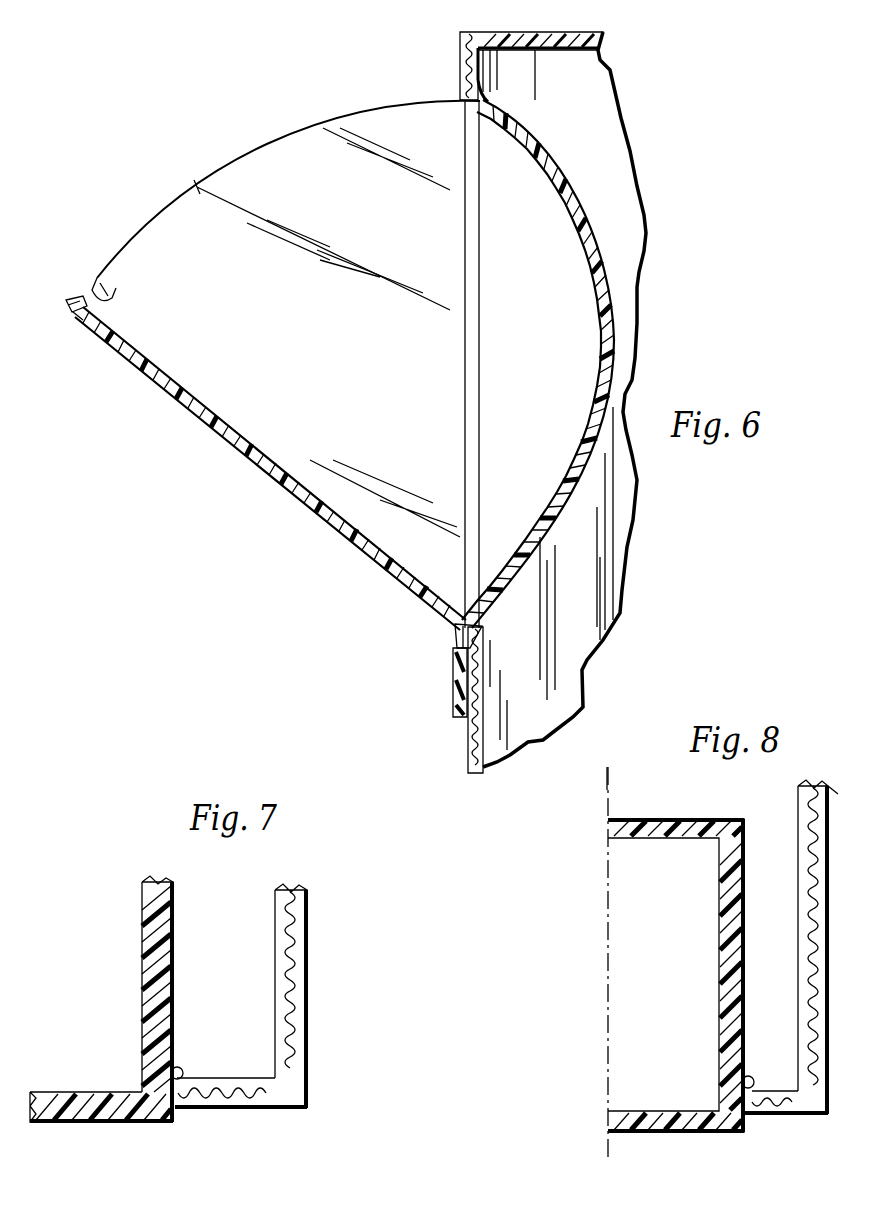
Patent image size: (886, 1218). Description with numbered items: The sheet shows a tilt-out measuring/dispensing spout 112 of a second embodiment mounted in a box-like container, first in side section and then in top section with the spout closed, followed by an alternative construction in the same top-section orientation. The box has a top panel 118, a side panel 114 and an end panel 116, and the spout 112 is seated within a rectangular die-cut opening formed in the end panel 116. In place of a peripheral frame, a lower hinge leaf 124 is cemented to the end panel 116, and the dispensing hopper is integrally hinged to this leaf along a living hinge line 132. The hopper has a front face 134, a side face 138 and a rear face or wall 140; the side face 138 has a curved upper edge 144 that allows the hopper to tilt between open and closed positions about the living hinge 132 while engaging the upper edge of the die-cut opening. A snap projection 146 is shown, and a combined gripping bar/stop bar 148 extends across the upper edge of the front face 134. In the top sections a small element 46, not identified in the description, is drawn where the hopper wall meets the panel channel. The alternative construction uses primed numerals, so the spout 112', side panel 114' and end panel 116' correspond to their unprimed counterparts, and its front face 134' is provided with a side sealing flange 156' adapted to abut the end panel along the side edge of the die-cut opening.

In FIG. 6, the tilt-out measuring/dispensing spout 112 is at (319, 364).
In FIG. 6, the top panel 118 is at (520, 32).
In FIG. 6, the side face 138 is at (305, 152).
In FIG. 7, the side face 138 is at (173, 975).
In FIG. 6, the curved upper edge 144 is at (197, 186).
In FIG. 6, the rear face or wall 140 is at (597, 307).
In FIG. 6, the front face 134 is at (270, 468).
In FIG. 7, the front face 134 is at (101, 1122).
In FIG. 6, the snap projection 146 is at (118, 292).
In FIG. 6, the combined gripping bar/stop bar 148 is at (68, 320).
In FIG. 6, the living hinge line 132 is at (456, 632).
In FIG. 6, the lower hinge leaf 124 is at (455, 690).
In FIG. 7, the side panel 114 is at (321, 996).
In FIG. 7, the end panel 116 is at (246, 1115).
In FIG. 7, the gasket 46 is at (183, 1070).
In FIG. 8, the gasket 46 is at (754, 1079).
In FIG. 8, the window assembly (alternate) 112' is at (699, 975).
In FIG. 8, the front face 134' is at (676, 1143).
In FIG. 8, the side sealing flange 156' is at (765, 1152).
In FIG. 8, the channel side wall (alternate) 114' is at (842, 947).
In FIG. 8, the channel bottom wall (alternate) 116' is at (810, 1110).